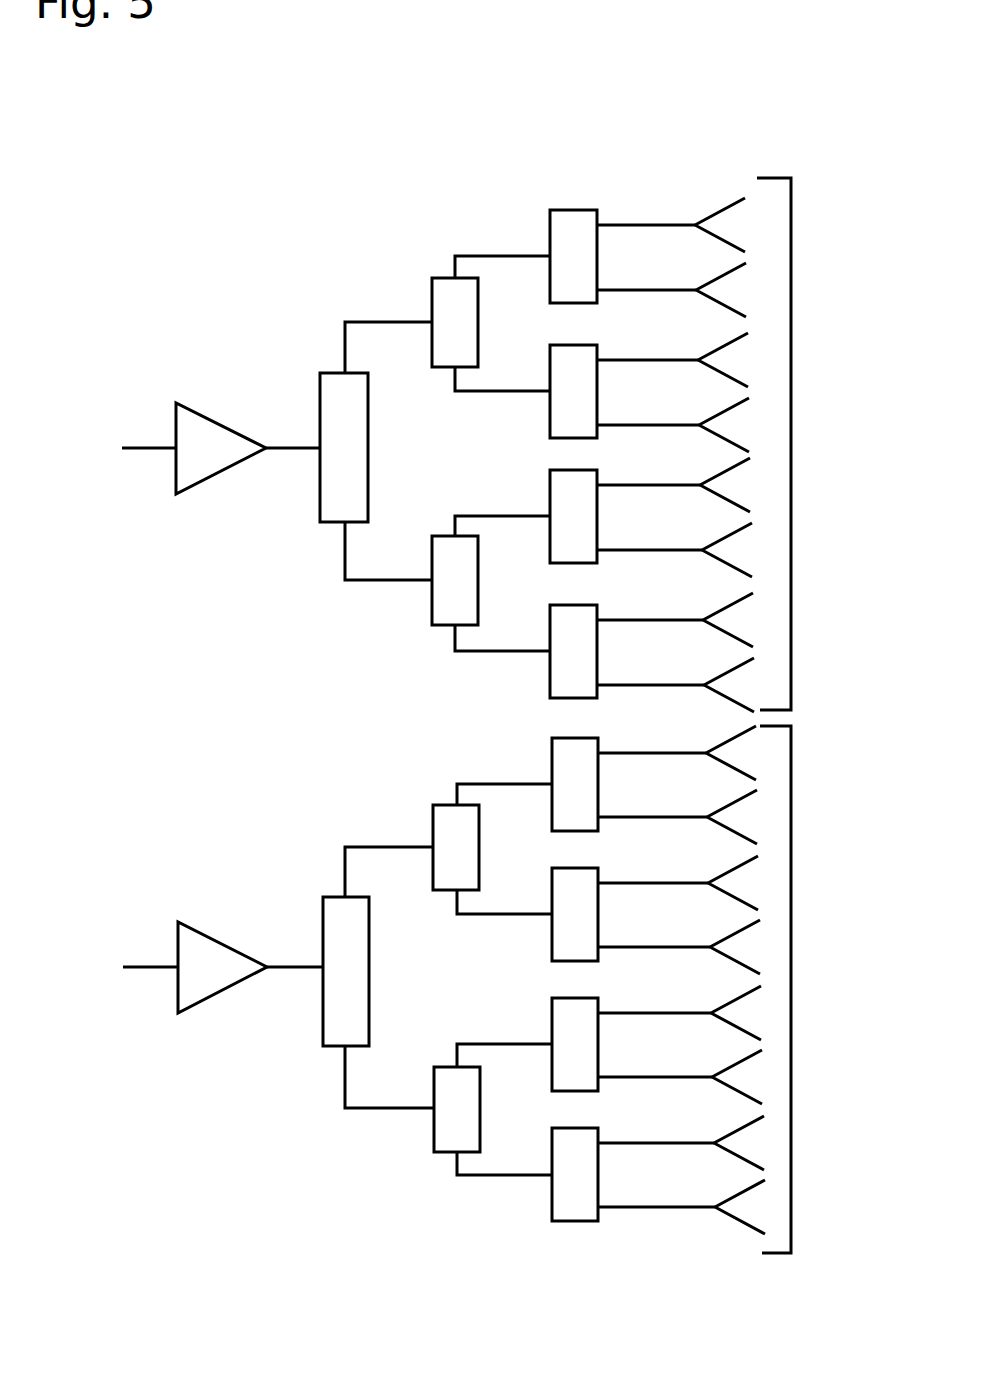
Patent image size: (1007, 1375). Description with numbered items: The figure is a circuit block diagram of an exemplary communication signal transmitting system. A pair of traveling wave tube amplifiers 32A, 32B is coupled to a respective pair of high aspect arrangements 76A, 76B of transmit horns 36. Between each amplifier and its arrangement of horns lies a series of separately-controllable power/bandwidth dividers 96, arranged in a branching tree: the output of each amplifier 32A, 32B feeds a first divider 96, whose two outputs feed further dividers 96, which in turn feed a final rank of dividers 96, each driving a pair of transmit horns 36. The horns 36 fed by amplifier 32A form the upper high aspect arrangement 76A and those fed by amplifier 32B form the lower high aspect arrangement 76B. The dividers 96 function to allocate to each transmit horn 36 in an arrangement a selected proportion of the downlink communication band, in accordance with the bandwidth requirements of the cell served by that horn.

The traveling wave tube amplifier 32A is at (212, 452).
The traveling wave tube amplifier 32B is at (213, 970).
The power/bandwidth divider 96 is at (328, 463).
The transmit horn 36 is at (717, 282).
The high aspect arrangement of transmit horns 76A is at (784, 197).
The high aspect arrangement of transmit horns 76B is at (792, 1242).